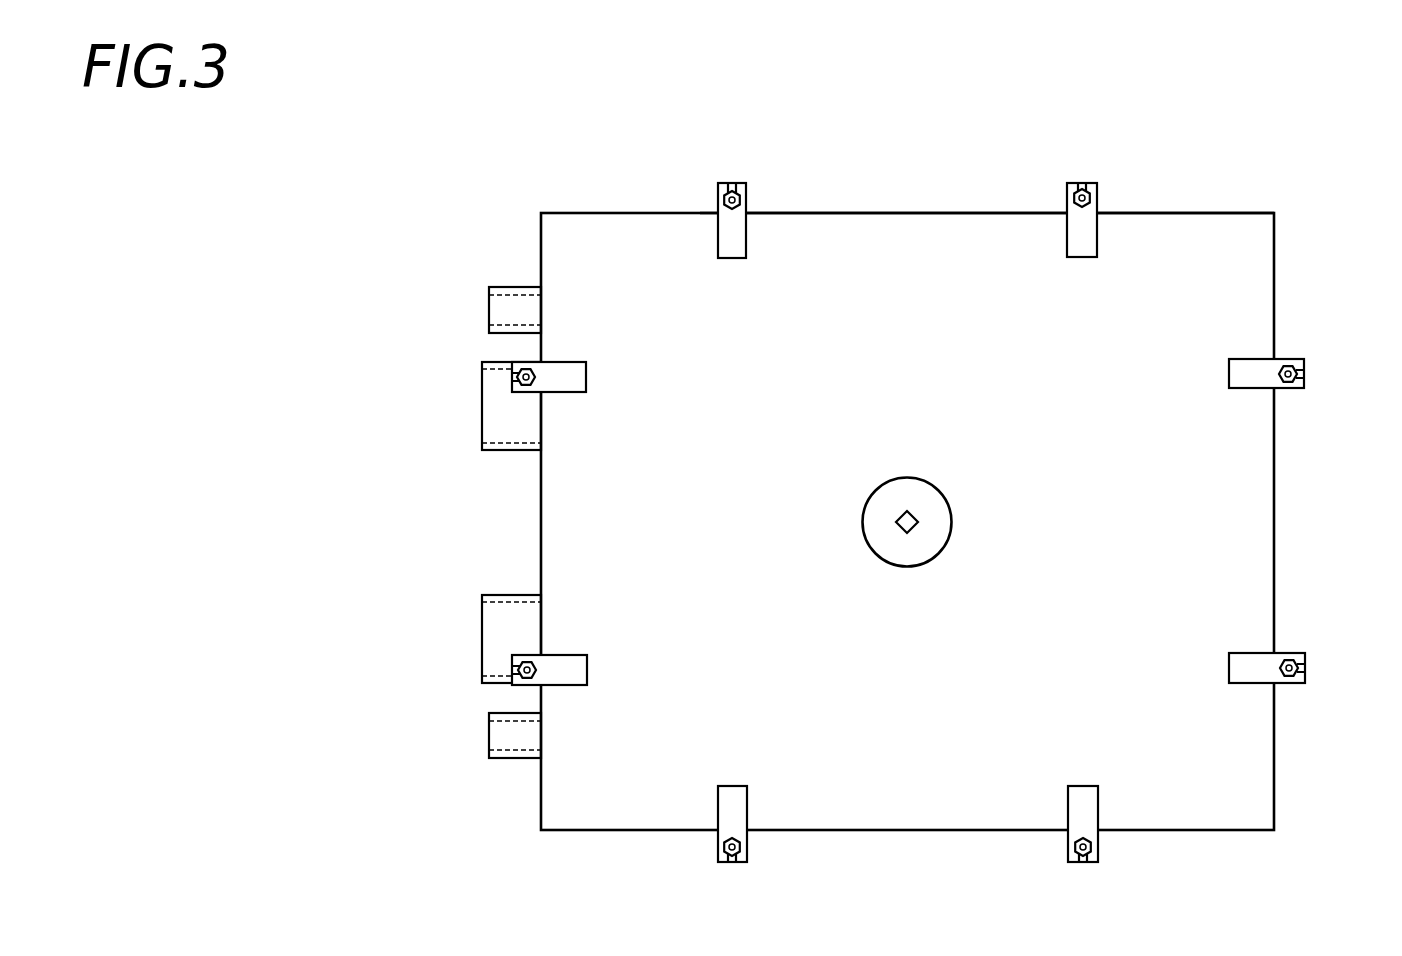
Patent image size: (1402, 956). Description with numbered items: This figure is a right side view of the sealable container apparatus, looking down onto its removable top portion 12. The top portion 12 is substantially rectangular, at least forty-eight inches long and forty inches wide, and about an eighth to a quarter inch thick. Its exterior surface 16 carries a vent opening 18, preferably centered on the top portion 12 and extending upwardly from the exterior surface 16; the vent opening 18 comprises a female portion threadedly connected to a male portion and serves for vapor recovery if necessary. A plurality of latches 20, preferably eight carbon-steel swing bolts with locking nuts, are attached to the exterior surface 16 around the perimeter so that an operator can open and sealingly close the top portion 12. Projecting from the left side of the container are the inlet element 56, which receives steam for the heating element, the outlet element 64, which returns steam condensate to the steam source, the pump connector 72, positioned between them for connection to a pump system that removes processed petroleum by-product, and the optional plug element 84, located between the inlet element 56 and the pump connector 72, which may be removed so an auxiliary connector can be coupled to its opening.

The top portion 12 is at (1235, 298).
The exterior surface 16 is at (1173, 242).
The vent opening 18 is at (922, 503).
The latches 20 is at (748, 192).
The inlet element 56 is at (512, 302).
The outlet element 64 is at (513, 740).
The pump connector 72 is at (500, 622).
The plug element 84 is at (500, 408).